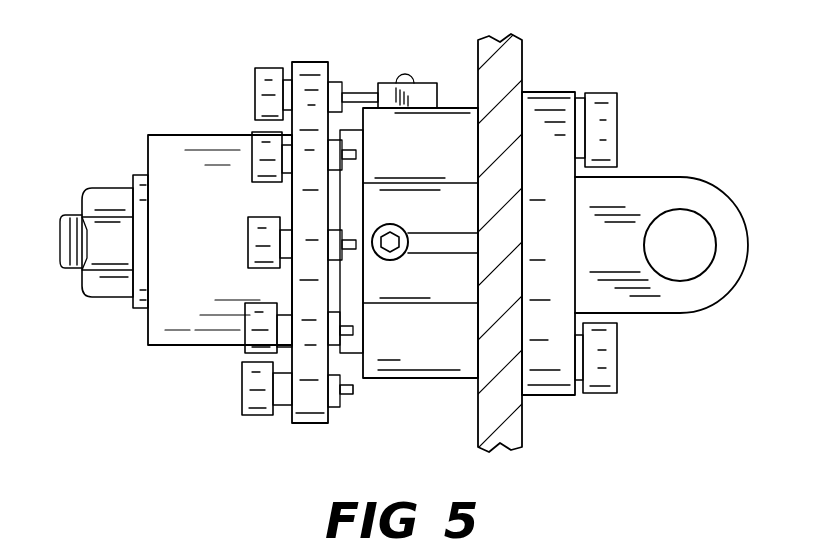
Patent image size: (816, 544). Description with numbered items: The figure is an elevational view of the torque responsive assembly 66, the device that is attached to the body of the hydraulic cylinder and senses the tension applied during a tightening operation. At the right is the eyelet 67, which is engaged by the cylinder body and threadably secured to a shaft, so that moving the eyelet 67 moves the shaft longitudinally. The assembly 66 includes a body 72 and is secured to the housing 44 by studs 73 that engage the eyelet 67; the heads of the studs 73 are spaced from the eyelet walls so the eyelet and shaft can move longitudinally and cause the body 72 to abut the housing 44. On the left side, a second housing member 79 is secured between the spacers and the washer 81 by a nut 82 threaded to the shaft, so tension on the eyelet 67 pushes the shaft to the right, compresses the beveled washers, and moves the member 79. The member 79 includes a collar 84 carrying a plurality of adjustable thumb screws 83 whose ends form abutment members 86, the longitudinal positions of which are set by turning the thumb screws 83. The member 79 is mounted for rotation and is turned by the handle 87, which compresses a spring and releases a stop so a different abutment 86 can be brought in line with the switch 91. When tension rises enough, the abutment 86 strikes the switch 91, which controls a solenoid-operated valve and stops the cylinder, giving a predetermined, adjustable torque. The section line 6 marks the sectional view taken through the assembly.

The section line 6 is at (114, 241).
The housing 44 is at (523, 67).
The torque responsive assembly 66 is at (212, 388).
The eyelet 67 is at (652, 193).
The body 72 is at (458, 345).
The studs 73 is at (610, 348).
The second housing member 79 is at (208, 157).
The washer 81 is at (140, 276).
The nut 82 is at (115, 200).
The adjustable thumb screws 83 is at (259, 150).
The collar 84 is at (307, 390).
The abutment member 86 is at (345, 394).
The handle 87 is at (398, 253).
The switch 91 is at (427, 82).